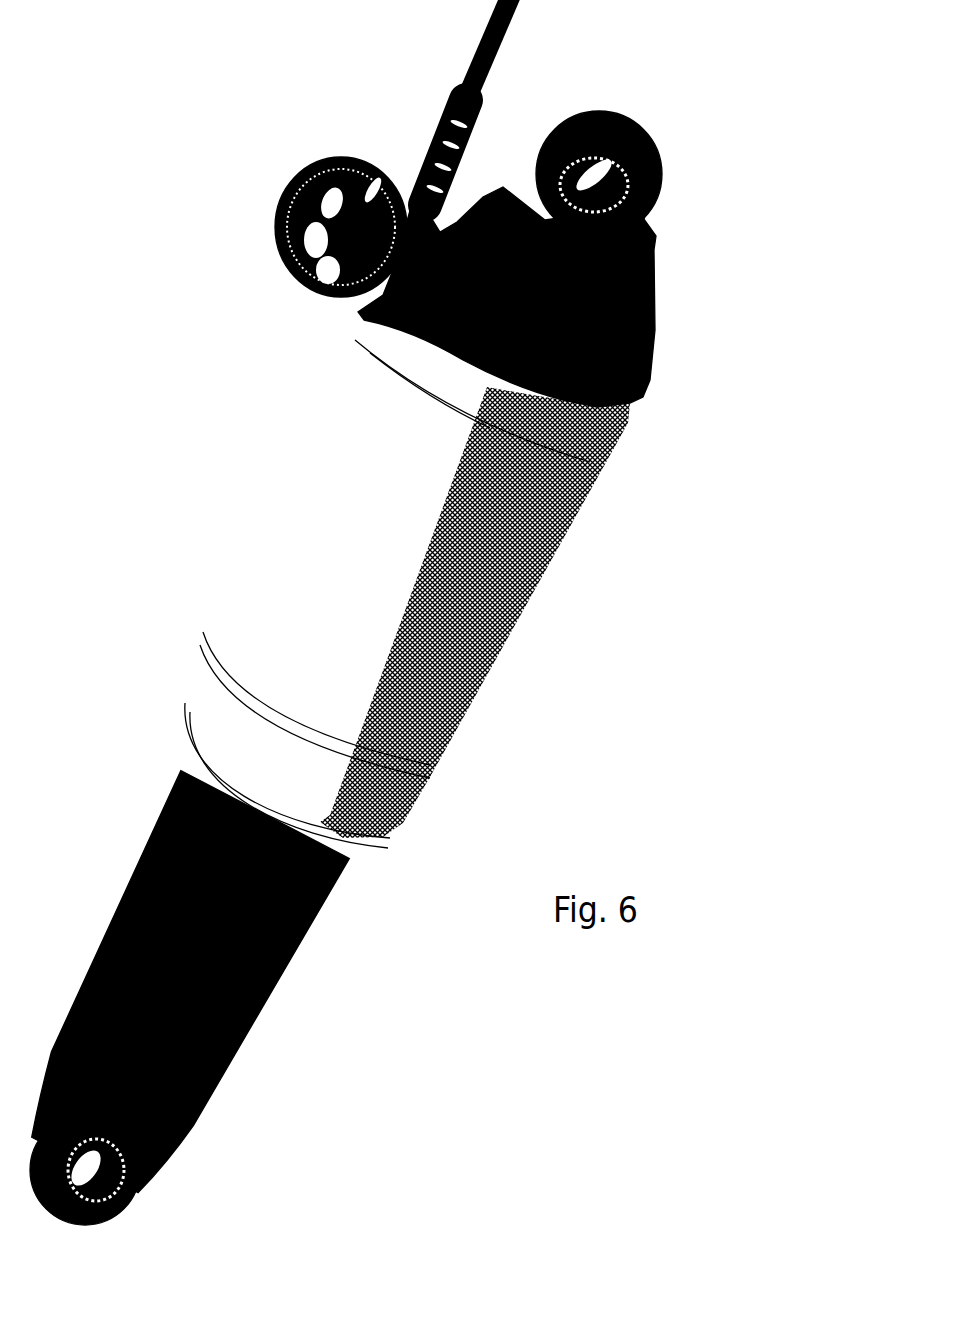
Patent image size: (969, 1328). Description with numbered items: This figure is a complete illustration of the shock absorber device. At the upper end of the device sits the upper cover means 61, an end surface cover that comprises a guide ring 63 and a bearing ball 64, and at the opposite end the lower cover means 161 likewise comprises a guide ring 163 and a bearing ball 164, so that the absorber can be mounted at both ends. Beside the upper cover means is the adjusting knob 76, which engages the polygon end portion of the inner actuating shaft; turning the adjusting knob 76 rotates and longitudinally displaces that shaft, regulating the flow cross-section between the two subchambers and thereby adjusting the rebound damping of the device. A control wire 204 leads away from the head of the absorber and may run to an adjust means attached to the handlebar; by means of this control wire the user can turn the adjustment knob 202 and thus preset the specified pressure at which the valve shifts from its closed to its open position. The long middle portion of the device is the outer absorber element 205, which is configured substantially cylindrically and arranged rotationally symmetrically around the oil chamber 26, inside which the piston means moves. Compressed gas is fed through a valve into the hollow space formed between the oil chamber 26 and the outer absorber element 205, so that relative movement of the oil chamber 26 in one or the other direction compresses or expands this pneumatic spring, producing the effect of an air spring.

The oil chamber 26 is at (148, 858).
The upper cover means 61 is at (658, 148).
The guide ring 63 is at (663, 172).
The bearing ball 64 is at (661, 187).
The adjusting knob 76 is at (651, 291).
The lower cover means 161 is at (153, 1157).
The guide ring 163 is at (139, 1199).
The bearing ball 164 is at (118, 1212).
The adjustment knob 202 is at (275, 226).
The control wire 204 is at (487, 32).
The outer absorber element 205 is at (346, 443).